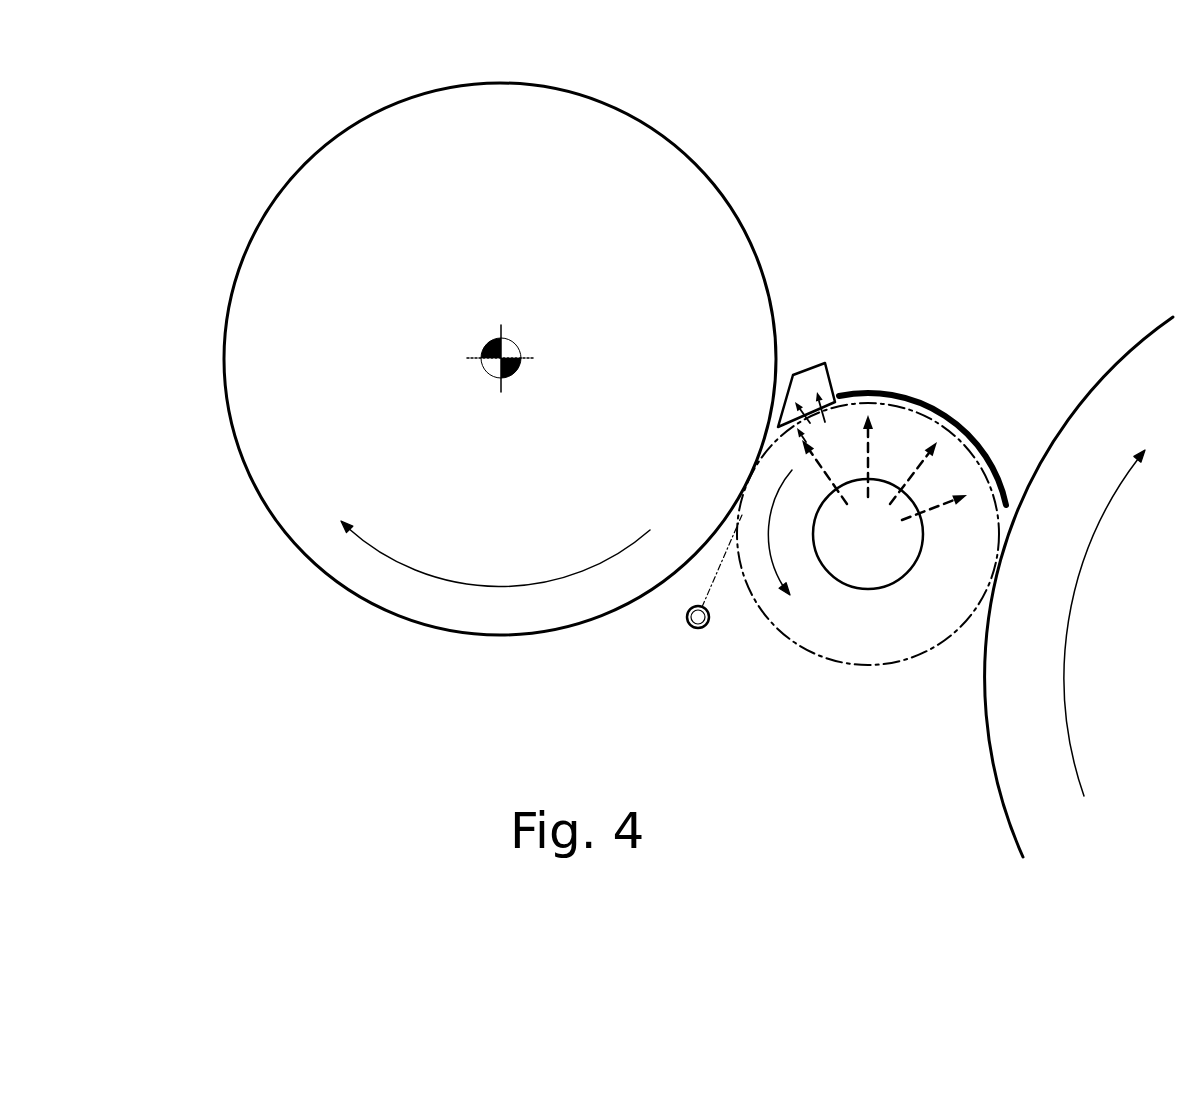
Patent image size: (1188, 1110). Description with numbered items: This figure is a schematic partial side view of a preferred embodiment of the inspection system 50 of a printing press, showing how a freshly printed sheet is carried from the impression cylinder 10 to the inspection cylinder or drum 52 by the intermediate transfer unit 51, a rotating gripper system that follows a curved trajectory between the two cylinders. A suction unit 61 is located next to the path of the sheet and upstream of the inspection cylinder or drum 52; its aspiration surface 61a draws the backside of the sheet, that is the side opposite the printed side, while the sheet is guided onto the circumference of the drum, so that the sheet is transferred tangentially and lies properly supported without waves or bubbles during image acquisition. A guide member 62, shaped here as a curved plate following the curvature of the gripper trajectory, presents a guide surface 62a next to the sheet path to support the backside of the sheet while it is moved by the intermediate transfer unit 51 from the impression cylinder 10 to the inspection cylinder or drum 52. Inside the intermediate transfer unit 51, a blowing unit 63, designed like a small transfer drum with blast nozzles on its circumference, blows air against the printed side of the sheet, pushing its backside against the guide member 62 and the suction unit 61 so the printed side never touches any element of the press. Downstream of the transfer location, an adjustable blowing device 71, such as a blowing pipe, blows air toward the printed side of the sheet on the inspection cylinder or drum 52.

The impression cylinder 10 is at (1158, 355).
The inspection system 50 is at (907, 250).
The intermediate transfer unit 51 is at (900, 665).
The inspection cylinder or drum 52 is at (253, 263).
The suction unit 61 is at (815, 365).
The aspiration surface 61a is at (802, 452).
The guide member 62 is at (945, 410).
The guide surface 62a is at (985, 511).
The blowing unit 63 is at (845, 568).
The adjustable blowing device 71 is at (697, 627).